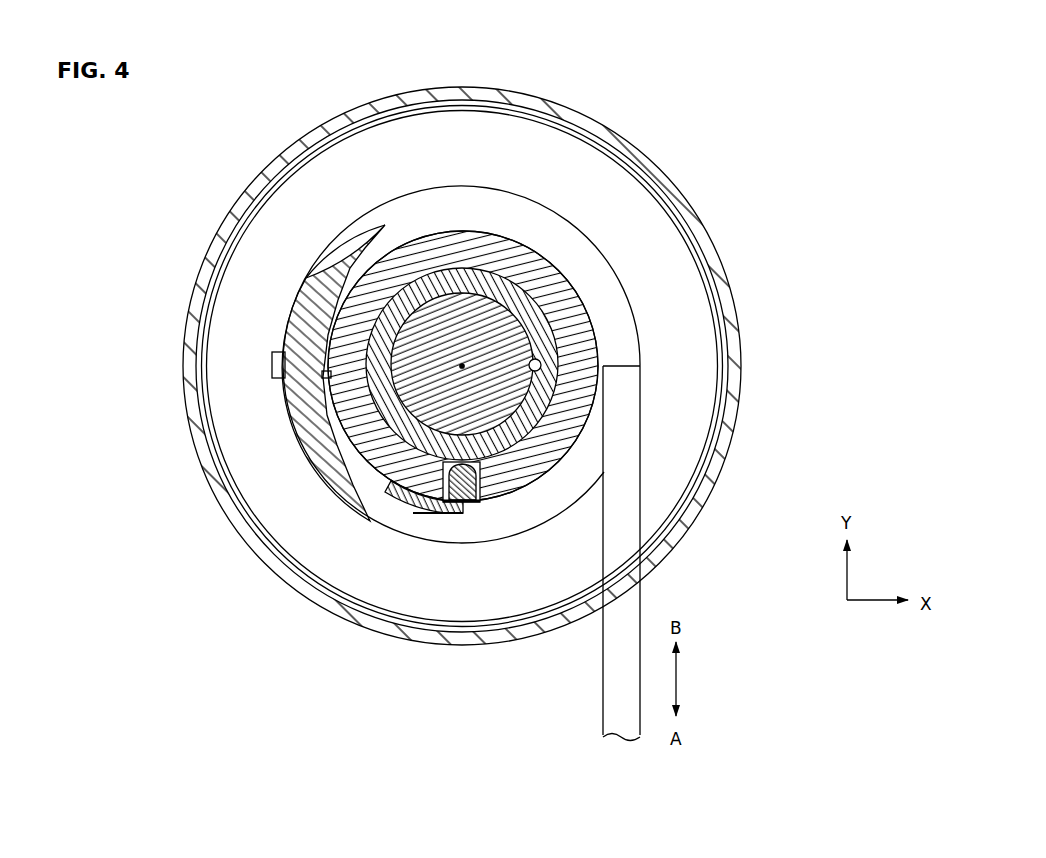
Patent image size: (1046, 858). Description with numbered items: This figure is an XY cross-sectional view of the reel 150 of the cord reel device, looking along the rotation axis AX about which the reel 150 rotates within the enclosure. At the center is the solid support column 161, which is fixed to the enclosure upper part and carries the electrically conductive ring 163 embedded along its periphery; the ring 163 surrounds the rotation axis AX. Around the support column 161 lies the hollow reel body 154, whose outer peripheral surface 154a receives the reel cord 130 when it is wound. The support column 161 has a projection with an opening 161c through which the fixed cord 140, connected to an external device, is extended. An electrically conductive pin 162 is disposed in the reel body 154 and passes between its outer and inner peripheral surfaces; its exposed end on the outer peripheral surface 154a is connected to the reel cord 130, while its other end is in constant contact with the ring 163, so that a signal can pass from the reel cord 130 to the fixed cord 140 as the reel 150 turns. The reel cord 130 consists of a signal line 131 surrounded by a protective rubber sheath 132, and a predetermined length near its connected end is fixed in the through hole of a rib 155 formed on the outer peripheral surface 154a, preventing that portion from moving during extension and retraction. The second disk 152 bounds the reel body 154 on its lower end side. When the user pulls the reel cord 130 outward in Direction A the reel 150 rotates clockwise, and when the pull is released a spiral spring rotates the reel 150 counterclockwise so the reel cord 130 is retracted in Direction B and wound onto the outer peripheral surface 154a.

The reel 150 is at (444, 325).
The second disk 152 is at (258, 175).
The fixed cord 140 is at (557, 208).
The reel body 154 is at (573, 333).
The outer peripheral surface 154a is at (600, 318).
The ring 163 is at (487, 270).
The support column 161 is at (598, 244).
The opening 161c is at (538, 366).
The pin 162 is at (478, 504).
The rubber sheath 132 is at (290, 440).
The signal line 131 is at (402, 515).
The rib 155 is at (272, 369).
The reel cord 130 is at (622, 513).
The rotation axis AX is at (462, 366).